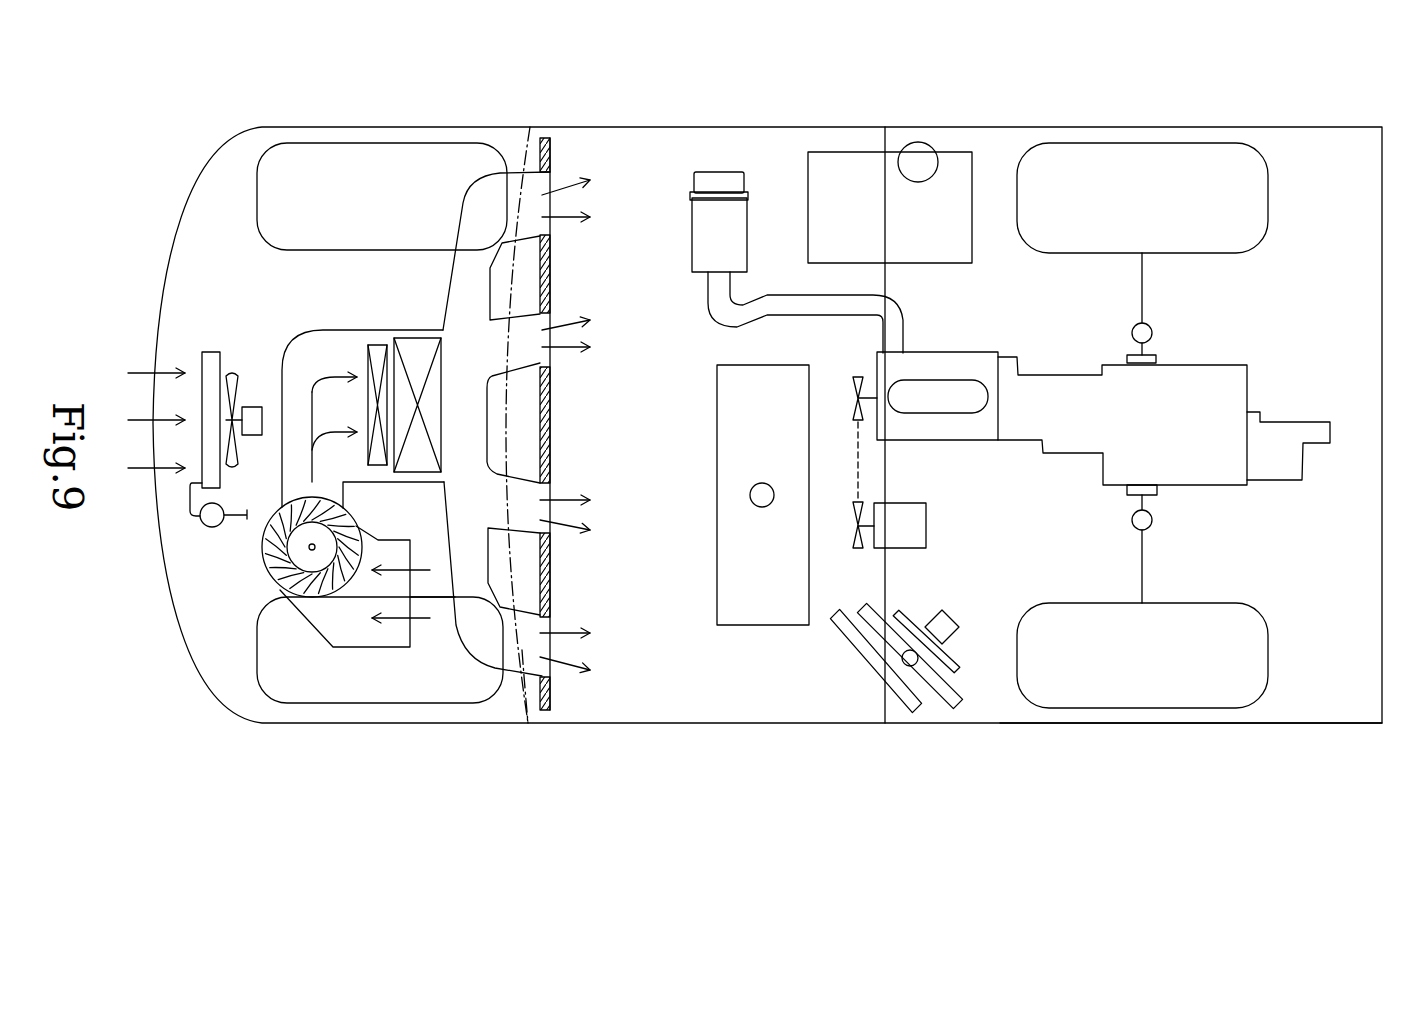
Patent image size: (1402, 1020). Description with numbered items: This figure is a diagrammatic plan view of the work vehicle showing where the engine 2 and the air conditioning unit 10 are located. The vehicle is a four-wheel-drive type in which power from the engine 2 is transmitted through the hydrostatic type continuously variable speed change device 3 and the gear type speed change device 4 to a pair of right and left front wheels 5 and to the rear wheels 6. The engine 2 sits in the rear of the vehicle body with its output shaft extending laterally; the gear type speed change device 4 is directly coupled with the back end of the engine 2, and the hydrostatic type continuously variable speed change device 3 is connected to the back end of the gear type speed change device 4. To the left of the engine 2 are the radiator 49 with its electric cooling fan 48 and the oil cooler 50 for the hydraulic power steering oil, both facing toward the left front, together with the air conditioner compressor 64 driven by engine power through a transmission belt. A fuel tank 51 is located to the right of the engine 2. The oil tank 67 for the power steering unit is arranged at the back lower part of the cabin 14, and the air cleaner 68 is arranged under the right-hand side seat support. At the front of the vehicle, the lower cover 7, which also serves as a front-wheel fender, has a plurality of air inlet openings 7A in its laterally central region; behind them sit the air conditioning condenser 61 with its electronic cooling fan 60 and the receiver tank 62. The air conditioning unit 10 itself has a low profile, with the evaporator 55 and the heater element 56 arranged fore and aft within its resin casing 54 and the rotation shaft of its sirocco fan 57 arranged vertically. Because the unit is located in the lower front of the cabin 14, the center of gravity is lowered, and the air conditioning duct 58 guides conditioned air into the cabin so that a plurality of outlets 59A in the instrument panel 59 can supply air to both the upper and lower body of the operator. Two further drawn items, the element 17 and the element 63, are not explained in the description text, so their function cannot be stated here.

The engine 2 is at (948, 354).
The hydrostatic type continuously variable speed change device 3 is at (1280, 428).
The gear type speed change device 4 is at (1067, 455).
The front wheels 5 is at (357, 150).
The rear wheels 6 is at (1143, 147).
The lower cover 7 is at (173, 237).
The air inlet openings 7A is at (152, 490).
The air conditioning unit 10 is at (297, 333).
The cabin 14 is at (523, 695).
The vehicle 17 is at (1065, 725).
The electric cooling fan 48 is at (962, 665).
The radiator 49 is at (945, 708).
The oil cooler 50 is at (865, 662).
The fuel tank 51 is at (845, 152).
The resin casing 54 is at (343, 330).
The evaporator 55 is at (438, 446).
The heater element 56 is at (378, 347).
The sirocco fan 57 is at (268, 577).
The air conditioning duct 58 is at (488, 425).
The instrument panel 59 is at (551, 423).
The outlets 59A is at (545, 204).
The electronic cooling fan 60 is at (233, 382).
The air conditioning condenser 61 is at (207, 352).
The receiver tank 62 is at (203, 528).
The valve 63 is at (858, 459).
The air conditioner compressor 64 is at (930, 524).
The oil tank 67 is at (717, 530).
The air cleaner 68 is at (695, 235).